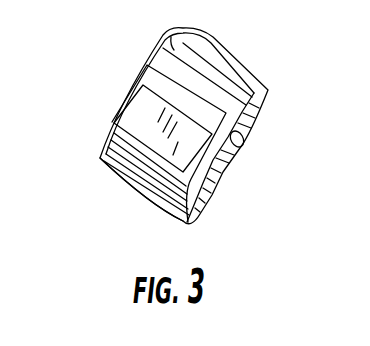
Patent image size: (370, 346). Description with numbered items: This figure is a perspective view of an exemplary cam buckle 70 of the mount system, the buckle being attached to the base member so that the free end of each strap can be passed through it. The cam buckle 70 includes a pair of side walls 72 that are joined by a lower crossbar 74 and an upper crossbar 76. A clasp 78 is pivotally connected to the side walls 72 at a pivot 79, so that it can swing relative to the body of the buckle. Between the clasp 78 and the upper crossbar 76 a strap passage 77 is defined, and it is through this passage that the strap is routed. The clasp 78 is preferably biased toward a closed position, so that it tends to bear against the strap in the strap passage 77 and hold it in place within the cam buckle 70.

The cam buckle 70 is at (107, 58).
The side walls 72 is at (113, 113).
The lower crossbar 74 is at (136, 190).
The upper crossbar 76 is at (228, 65).
The strap passage 77 is at (242, 110).
The clasp 78 is at (148, 128).
The pivot 79 is at (242, 144).